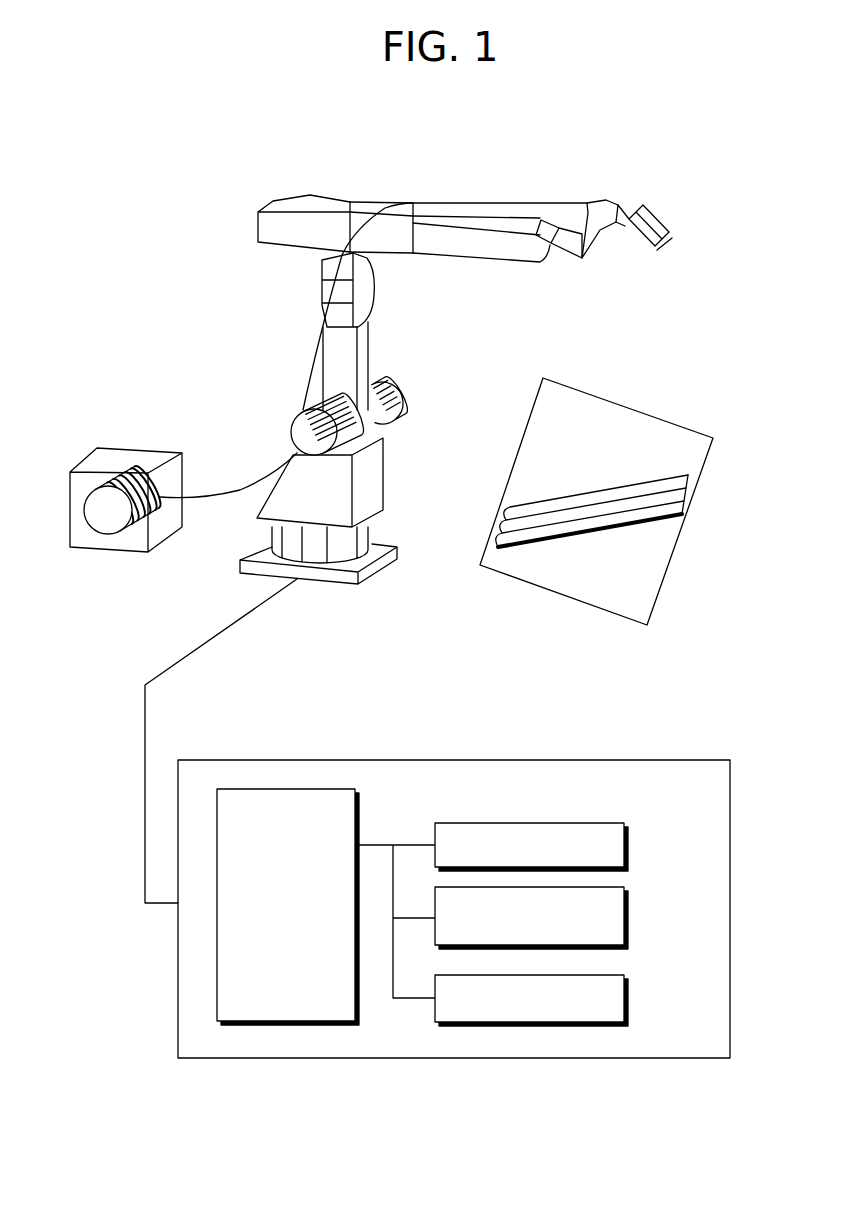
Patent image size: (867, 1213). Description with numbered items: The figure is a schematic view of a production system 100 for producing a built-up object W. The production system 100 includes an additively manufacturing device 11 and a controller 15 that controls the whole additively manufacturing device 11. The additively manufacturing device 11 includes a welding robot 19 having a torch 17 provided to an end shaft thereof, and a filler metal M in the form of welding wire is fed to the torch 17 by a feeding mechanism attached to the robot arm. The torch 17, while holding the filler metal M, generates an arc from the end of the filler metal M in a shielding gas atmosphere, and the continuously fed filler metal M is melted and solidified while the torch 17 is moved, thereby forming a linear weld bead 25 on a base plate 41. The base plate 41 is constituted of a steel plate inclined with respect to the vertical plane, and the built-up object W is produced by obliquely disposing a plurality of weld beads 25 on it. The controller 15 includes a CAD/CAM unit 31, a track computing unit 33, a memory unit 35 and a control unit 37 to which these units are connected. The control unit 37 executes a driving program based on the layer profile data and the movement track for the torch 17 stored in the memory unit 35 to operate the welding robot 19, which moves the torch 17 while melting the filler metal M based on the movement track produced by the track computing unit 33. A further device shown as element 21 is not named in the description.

The production system 100 is at (693, 167).
The additively manufacturing device 11 is at (272, 173).
The welding robot 19 is at (335, 218).
The filler metal M is at (542, 207).
The torch 17 is at (659, 256).
The camera 21 is at (134, 449).
The built-up object W is at (640, 467).
The weld bead 25 is at (694, 499).
The base plate 41 is at (648, 568).
The controller 15 is at (640, 748).
The control unit 37 is at (360, 805).
The CAD/CAM unit 31 is at (628, 848).
The track computing unit 33 is at (627, 917).
The memory unit 35 is at (627, 998).